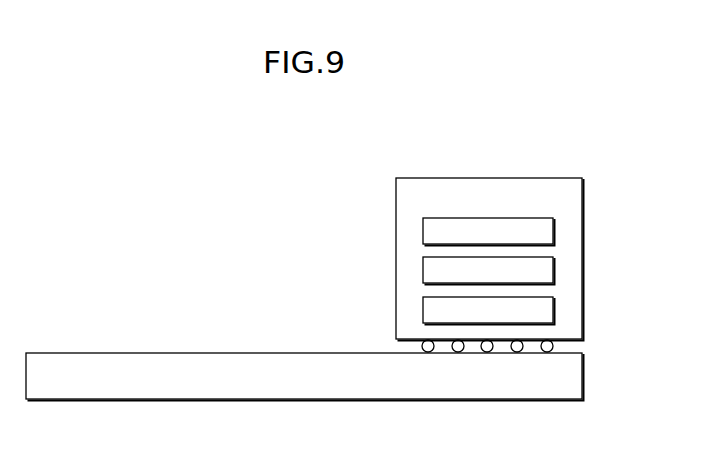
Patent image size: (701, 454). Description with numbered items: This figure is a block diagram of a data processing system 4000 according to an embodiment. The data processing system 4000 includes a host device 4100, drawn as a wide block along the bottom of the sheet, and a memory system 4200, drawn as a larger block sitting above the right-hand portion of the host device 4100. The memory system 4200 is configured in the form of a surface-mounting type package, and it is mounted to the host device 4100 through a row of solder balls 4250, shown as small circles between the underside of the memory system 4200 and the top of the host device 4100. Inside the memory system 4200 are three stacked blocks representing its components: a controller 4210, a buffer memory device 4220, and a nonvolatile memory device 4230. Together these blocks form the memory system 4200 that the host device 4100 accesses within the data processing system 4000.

The data processing system 4000 is at (100, 150).
The host device 4100 is at (305, 377).
The memory system 4200 is at (490, 259).
The controller 4210 is at (489, 232).
The buffer memory device 4220 is at (489, 271).
The nonvolatile memory device 4230 is at (489, 311).
The solder balls 4250 is at (558, 347).